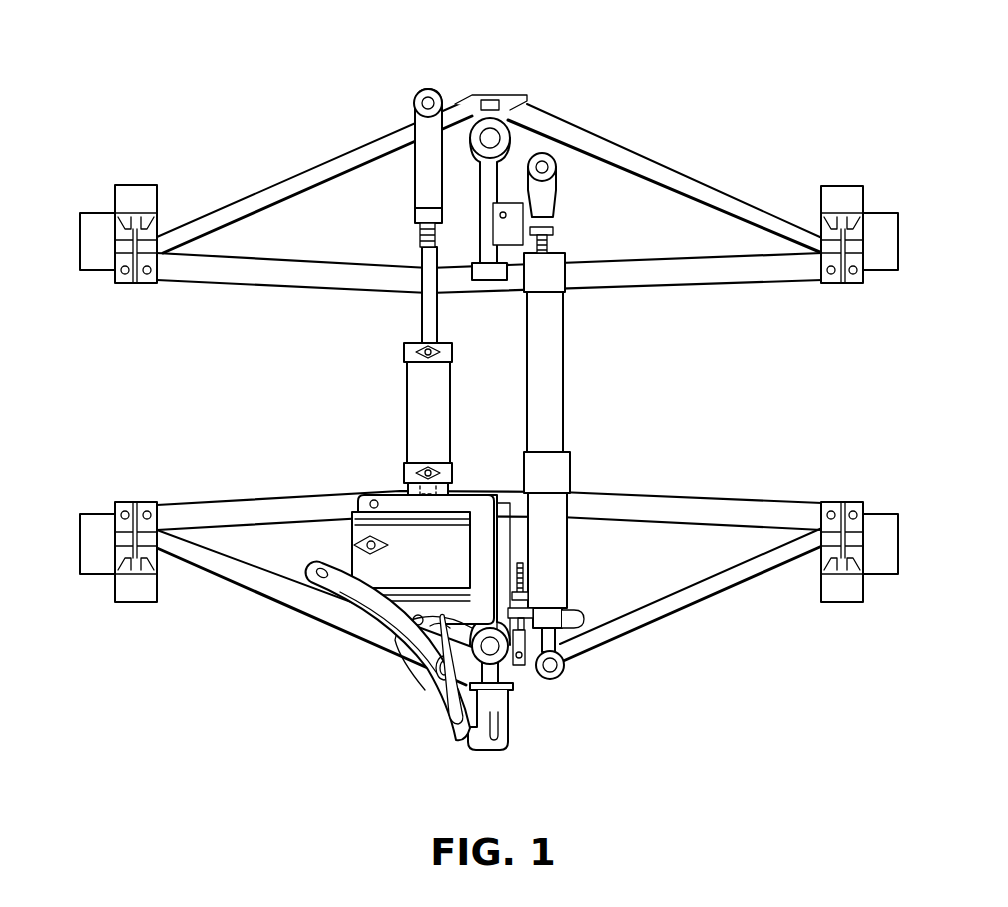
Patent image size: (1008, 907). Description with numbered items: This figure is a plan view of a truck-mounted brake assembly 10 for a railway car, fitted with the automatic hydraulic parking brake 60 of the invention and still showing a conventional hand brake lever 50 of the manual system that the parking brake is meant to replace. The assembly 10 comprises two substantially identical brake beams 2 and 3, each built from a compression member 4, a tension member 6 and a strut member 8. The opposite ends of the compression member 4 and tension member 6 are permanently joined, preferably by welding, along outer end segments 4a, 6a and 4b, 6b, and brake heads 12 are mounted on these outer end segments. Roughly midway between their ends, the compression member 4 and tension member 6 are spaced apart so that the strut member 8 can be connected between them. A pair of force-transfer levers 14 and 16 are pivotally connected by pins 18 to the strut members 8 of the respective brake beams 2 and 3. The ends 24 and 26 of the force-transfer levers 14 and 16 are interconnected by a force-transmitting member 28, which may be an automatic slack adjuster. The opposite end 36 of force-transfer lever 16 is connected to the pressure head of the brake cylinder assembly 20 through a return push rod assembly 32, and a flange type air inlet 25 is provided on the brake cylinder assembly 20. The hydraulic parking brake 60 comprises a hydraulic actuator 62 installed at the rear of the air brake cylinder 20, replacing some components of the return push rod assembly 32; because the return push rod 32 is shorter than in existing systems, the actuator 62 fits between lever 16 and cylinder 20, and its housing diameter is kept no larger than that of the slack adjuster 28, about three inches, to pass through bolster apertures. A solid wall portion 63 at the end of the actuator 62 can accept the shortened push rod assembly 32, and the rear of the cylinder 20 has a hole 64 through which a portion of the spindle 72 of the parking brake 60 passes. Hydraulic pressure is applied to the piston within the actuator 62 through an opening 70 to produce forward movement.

The brake beam 2 is at (645, 672).
The brake beam 3 is at (691, 155).
The compression member 4 is at (285, 284).
The outer end segment of compression member 4a is at (162, 272).
The outer end segment of compression member 4b is at (818, 272).
The tension member 6 is at (325, 165).
The outer end segment of tension member 6a is at (160, 238).
The outer end segment of tension member 6b is at (816, 238).
The strut member 8 is at (480, 190).
The truck-mounted brake assembly 10 is at (246, 126).
The brake head 12 is at (136, 190).
The force-transfer lever 14 is at (454, 695).
The force-transfer lever 16 is at (452, 104).
The pin 18 is at (492, 130).
The brake cylinder assembly 20 is at (411, 567).
The end of force-transfer lever 24 is at (561, 673).
The brake cylinder flange type air inlet 25 is at (352, 545).
The end of force-transfer lever 26 is at (552, 160).
The force-transmitting member 28 is at (563, 355).
The return push rod assembly 32 is at (422, 295).
The opposite end of force-transfer lever 36 is at (413, 108).
The hand brake lever 50 is at (382, 620).
The automatic hydraulic parking brake 60 is at (385, 436).
The hydraulic actuator 62 is at (452, 402).
The solid wall portion 63 is at (450, 345).
The hole 64 is at (452, 482).
The opening 70 is at (405, 354).
The spindle 72 is at (447, 500).